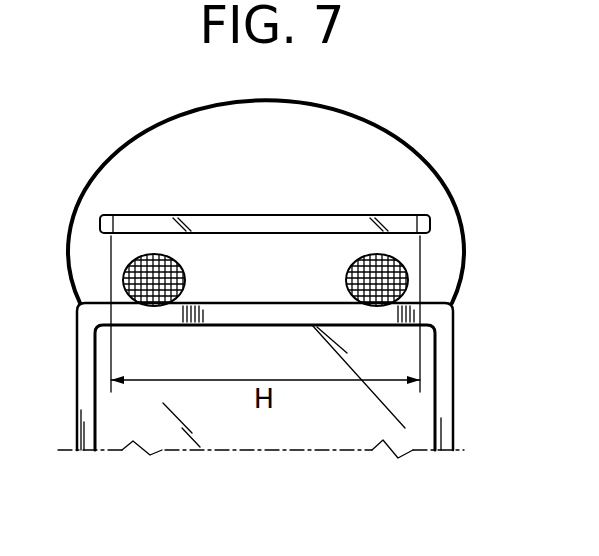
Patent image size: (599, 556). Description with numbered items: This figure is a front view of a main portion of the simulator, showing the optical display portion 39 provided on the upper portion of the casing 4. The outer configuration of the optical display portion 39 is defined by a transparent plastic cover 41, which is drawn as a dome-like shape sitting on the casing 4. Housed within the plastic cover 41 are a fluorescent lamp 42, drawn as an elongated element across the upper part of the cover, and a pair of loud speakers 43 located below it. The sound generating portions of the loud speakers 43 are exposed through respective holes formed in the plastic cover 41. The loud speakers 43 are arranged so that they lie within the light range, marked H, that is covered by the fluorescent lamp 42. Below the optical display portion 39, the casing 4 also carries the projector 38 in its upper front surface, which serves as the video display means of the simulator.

The casing 4 is at (440, 390).
The projector 38 is at (322, 413).
The optical display portion 39 is at (266, 181).
The transparent plastic cover 41 is at (366, 119).
The fluorescent lamp 42 is at (258, 222).
The loud speakers 43 is at (344, 272).